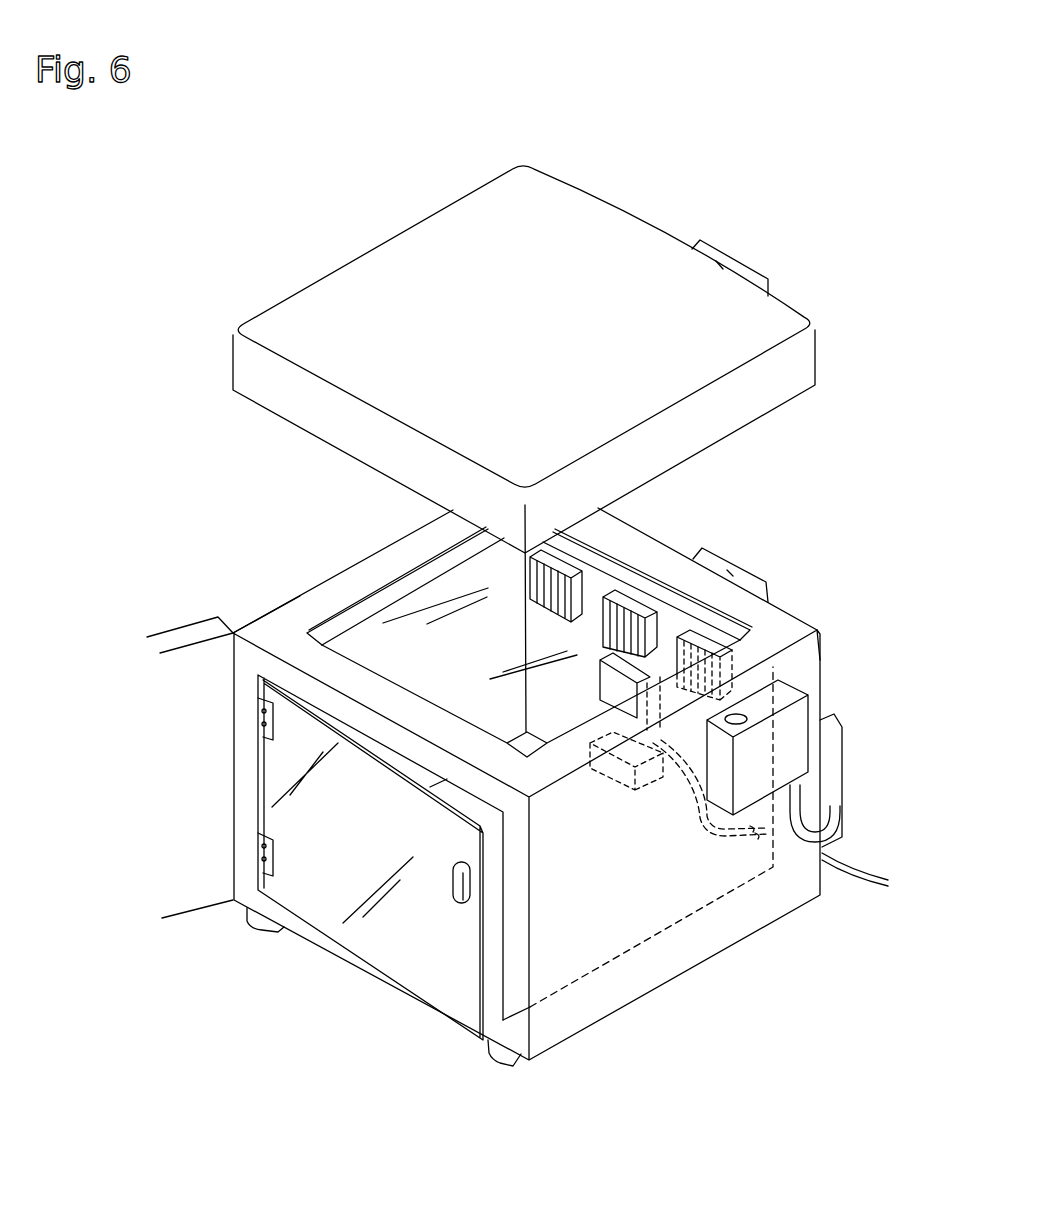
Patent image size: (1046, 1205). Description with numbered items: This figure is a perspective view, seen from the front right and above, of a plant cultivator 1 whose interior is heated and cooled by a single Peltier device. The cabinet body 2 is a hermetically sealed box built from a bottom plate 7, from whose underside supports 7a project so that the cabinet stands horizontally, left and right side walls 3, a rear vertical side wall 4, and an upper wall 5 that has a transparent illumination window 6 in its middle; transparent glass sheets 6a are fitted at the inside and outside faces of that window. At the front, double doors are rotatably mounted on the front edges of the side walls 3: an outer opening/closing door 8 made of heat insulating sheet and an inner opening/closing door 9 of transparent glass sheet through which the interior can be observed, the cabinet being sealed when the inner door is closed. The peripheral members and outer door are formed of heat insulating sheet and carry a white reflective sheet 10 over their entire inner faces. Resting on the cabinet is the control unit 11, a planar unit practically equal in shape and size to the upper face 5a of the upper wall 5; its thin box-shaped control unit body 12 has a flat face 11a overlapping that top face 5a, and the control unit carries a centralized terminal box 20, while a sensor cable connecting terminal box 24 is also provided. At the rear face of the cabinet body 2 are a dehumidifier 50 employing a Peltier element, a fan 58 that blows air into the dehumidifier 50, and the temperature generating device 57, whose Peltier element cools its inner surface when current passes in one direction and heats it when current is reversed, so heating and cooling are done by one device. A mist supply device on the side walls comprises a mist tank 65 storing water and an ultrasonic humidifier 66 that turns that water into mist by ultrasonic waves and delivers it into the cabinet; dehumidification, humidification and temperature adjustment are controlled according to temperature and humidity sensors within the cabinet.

The plant cultivator 1 is at (678, 192).
The cabinet body 2 is at (832, 947).
The side wall 3 is at (240, 625).
The rear vertical side wall 4 is at (815, 625).
The upper wall 5 is at (327, 592).
The upper face 5a is at (373, 575).
The illumination window 6 is at (480, 568).
The transparent glass sheet 6a is at (433, 592).
The bottom plate 7 is at (325, 948).
The support 7a is at (267, 933).
The outer opening/closing door 8 is at (168, 905).
The inner opening/closing door 9 is at (383, 967).
The white reflective sheet 10 is at (290, 618).
The control unit 11 is at (249, 307).
The flat face 11a is at (260, 403).
The control unit body 12 is at (358, 265).
The centralized terminal box 20 is at (745, 268).
The sensor cable connecting terminal box 24 is at (750, 573).
The dehumidifier 50 is at (610, 692).
The temperature generating device 57 is at (684, 636).
The fan 58 is at (608, 778).
The mist tank 65 is at (798, 717).
The ultrasonic humidifier 66 is at (830, 762).